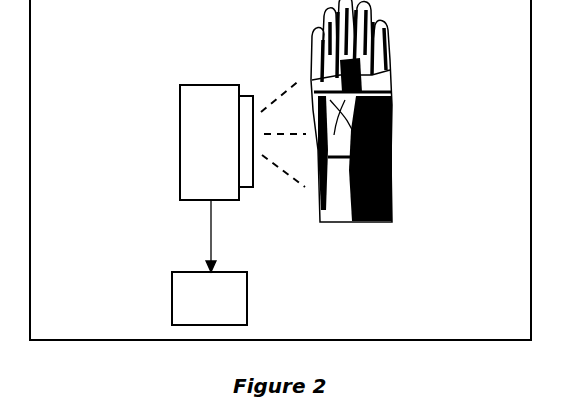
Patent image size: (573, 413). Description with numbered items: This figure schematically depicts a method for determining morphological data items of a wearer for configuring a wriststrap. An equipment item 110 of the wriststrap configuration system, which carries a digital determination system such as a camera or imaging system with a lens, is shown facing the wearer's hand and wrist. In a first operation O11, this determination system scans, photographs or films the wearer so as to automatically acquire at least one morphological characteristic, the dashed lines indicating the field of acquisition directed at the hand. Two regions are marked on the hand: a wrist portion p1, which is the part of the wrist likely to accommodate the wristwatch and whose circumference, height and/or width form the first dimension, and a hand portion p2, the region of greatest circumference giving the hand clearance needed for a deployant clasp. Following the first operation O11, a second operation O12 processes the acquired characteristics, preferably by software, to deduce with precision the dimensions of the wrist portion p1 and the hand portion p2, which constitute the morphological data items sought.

The equipment item 110 is at (212, 143).
The first operation O11 is at (298, 65).
The second operation O12 is at (198, 245).
The wrist portion p1 is at (395, 157).
The hand portion p2 is at (400, 92).